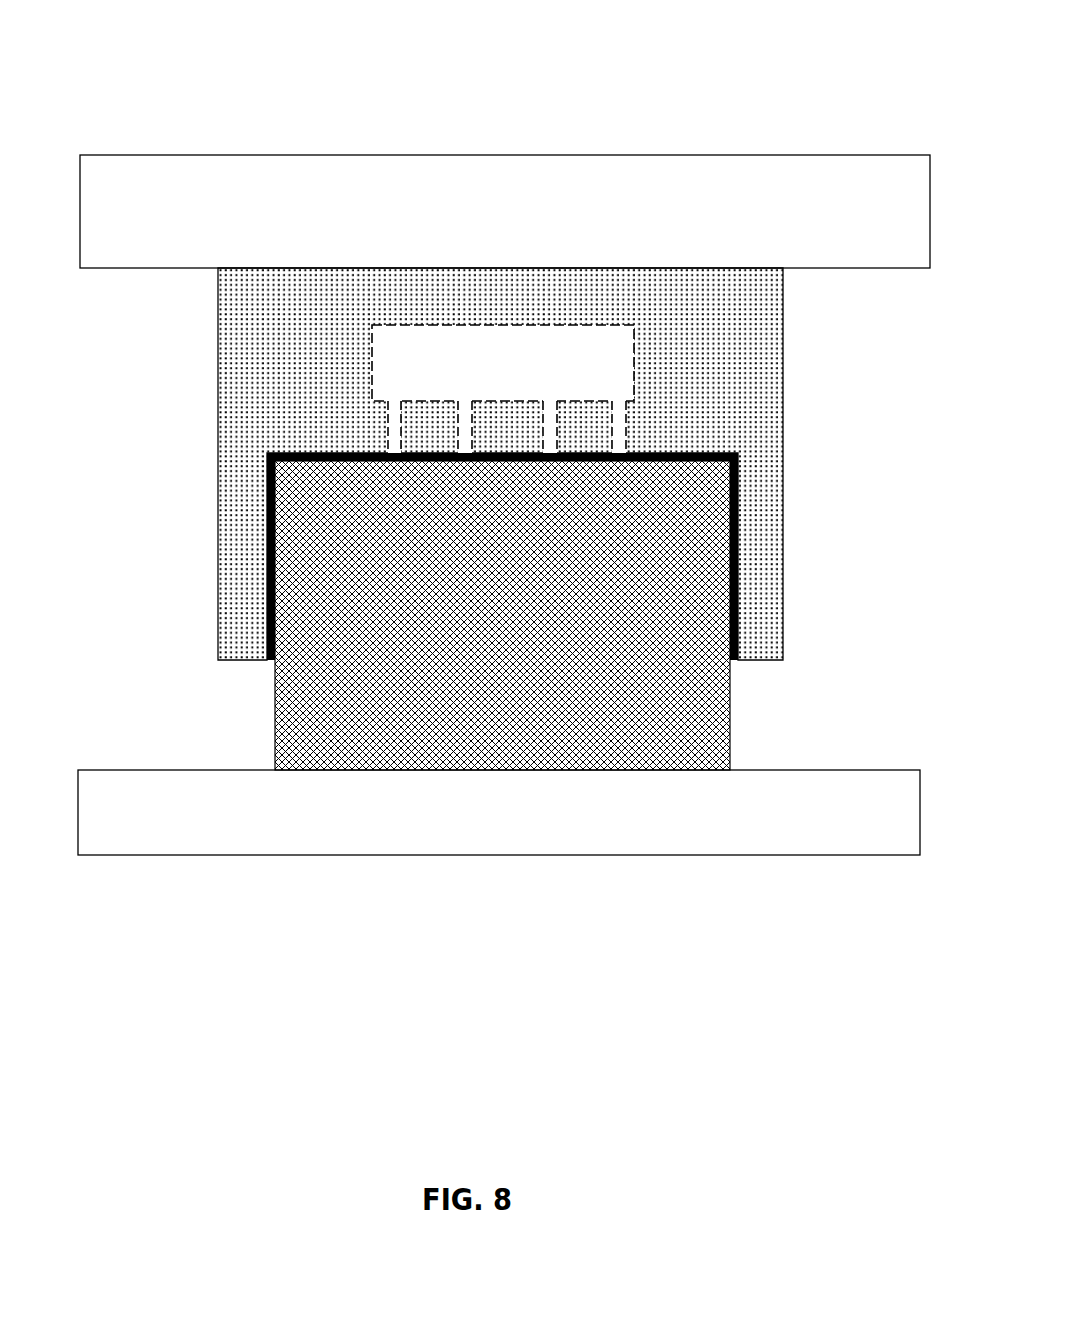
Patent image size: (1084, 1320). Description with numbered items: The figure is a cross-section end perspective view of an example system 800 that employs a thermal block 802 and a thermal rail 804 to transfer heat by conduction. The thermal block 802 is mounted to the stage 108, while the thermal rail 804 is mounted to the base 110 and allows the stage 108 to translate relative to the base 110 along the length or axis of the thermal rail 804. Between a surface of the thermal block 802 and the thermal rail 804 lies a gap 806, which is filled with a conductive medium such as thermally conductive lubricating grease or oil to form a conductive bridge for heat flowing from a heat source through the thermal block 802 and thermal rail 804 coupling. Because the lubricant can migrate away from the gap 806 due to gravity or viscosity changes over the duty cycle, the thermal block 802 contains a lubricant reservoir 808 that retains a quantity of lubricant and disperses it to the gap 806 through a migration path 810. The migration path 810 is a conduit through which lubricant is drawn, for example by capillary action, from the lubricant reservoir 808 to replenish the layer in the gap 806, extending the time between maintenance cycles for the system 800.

The system 800 is at (224, 70).
The stage 108 is at (899, 155).
The base 110 is at (867, 855).
The thermal block 802 is at (237, 660).
The thermal rail 804 is at (730, 747).
The gap 806 is at (267, 578).
The lubricant reservoir 808 is at (578, 325).
The migration path 810 is at (387, 423).